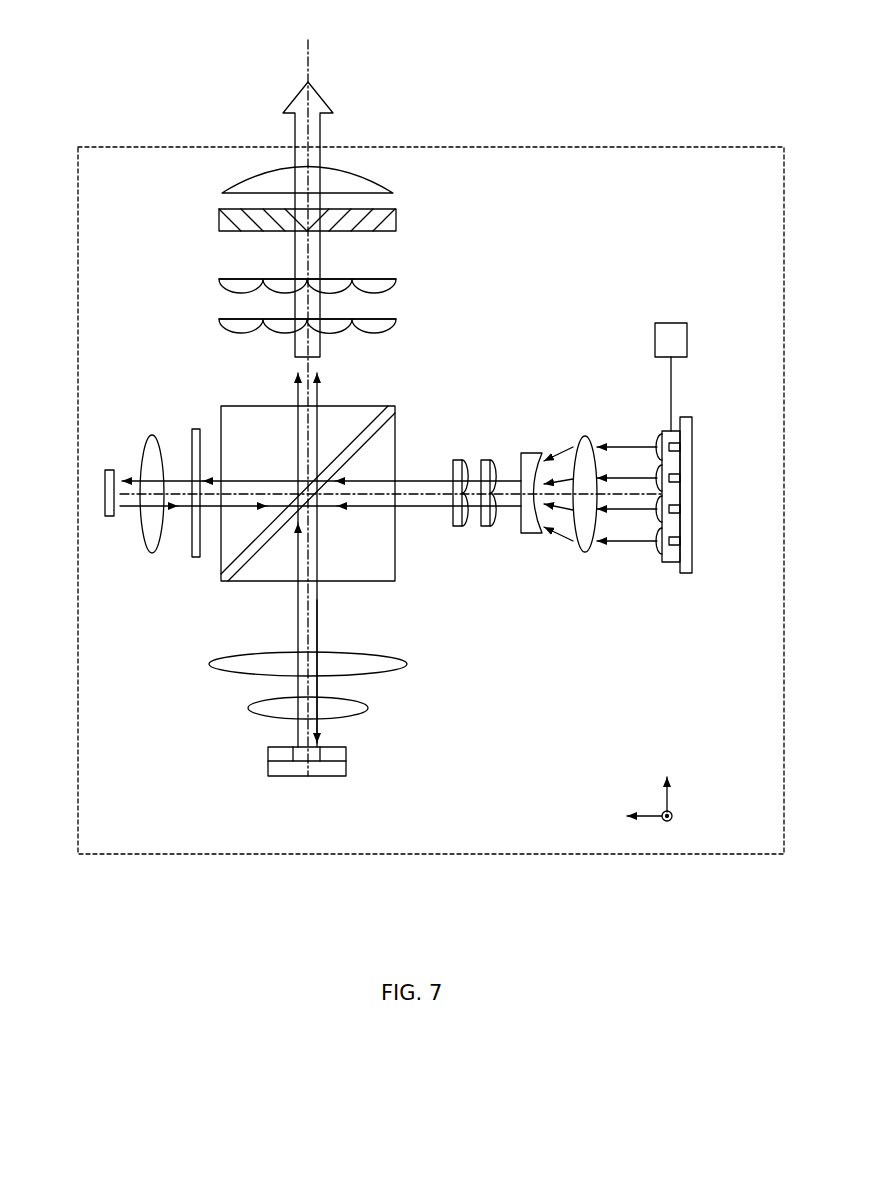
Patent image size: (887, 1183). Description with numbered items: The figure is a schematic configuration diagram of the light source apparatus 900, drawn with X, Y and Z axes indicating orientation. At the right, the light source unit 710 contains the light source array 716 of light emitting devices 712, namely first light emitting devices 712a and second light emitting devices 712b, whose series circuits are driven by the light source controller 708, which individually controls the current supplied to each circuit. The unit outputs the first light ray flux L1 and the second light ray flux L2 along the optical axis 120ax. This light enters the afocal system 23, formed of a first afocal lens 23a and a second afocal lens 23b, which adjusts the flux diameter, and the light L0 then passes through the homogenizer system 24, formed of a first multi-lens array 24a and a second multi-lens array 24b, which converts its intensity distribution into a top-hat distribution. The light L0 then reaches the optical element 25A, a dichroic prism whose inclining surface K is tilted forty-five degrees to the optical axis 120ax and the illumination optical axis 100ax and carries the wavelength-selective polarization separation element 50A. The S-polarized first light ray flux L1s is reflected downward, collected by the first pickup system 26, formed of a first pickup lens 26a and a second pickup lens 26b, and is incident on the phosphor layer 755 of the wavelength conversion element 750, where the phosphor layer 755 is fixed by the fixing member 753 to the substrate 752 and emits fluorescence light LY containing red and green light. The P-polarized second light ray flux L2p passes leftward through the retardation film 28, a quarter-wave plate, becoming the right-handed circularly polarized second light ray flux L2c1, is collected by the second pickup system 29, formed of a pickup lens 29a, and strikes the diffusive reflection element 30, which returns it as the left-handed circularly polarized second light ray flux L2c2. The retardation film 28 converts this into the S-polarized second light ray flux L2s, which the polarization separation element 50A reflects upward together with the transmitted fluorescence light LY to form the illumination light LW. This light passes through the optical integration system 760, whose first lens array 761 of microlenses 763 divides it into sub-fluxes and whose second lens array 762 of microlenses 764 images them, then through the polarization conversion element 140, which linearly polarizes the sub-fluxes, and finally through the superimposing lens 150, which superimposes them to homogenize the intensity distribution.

The light source apparatus 900 is at (678, 146).
The illumination optical axis 100ax is at (310, 55).
The illumination light LW is at (295, 132).
The superimposing lens 150 is at (373, 178).
The polarization conversion element 140 is at (397, 222).
The optical integration system 760 is at (335, 304).
The first lens array 761 is at (396, 319).
The second lens array 762 is at (396, 279).
The microlenses 763 is at (219, 319).
The microlenses 764 is at (219, 279).
The optical element 25A is at (357, 471).
The polarization separation element 50A is at (371, 422).
The inclining surface K is at (362, 405).
The optical axis 120ax is at (421, 497).
The second light ray flux L2p is at (257, 480).
The second light ray flux L2c1 is at (178, 478).
The second light ray flux L2c2 is at (172, 508).
The second light ray flux L2s is at (318, 440).
The fluorescence light LY is at (297, 440).
The first light ray flux L1s is at (318, 634).
The diffusive reflection element 30 is at (110, 470).
The second pickup system 29 is at (147, 427).
The pickup lens 29a is at (143, 540).
The retardation film 28 is at (196, 429).
The homogenizer system 24 is at (469, 446).
The first multi-lens array 24a is at (486, 460).
The second multi-lens array 24b is at (456, 460).
The afocal system 23 is at (562, 455).
The first afocal lens 23a is at (585, 436).
The second afocal lens 23b is at (534, 453).
The light L0 is at (500, 512).
The second light ray flux L2 is at (622, 457).
The first light ray flux L1 is at (627, 473).
The light source unit 710 is at (708, 547).
The light source array 716 is at (670, 556).
The light emitting devices 712 is at (724, 494).
The first light emitting devices 712a is at (680, 541).
The second light emitting devices 712b is at (680, 447).
The light source controller 708 is at (671, 323).
The first pickup system 26 is at (370, 692).
The first pickup lens 26a is at (407, 664).
The second pickup lens 26b is at (367, 708).
The wavelength conversion element 750 is at (324, 764).
The substrate 752 is at (278, 770).
The fixing member 753 is at (270, 752).
The phosphor layer 755 is at (320, 756).
The X axis X is at (667, 781).
The Y axis Y is at (635, 818).
The Z axis Z is at (677, 818).